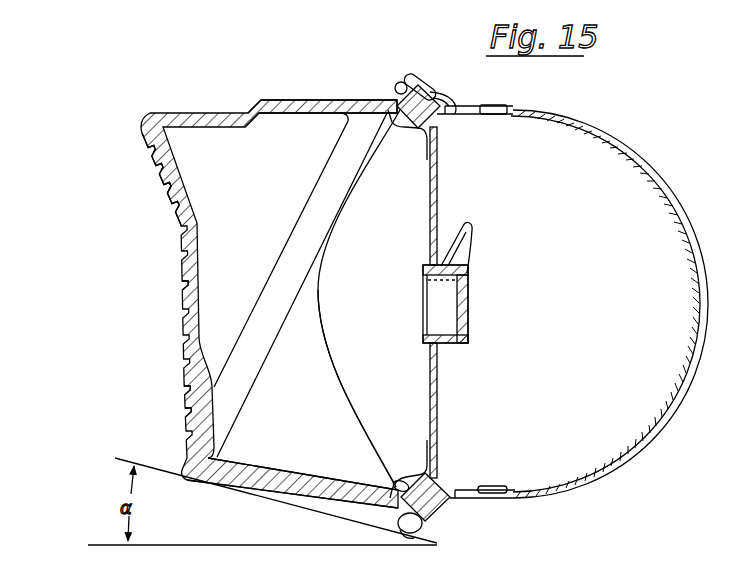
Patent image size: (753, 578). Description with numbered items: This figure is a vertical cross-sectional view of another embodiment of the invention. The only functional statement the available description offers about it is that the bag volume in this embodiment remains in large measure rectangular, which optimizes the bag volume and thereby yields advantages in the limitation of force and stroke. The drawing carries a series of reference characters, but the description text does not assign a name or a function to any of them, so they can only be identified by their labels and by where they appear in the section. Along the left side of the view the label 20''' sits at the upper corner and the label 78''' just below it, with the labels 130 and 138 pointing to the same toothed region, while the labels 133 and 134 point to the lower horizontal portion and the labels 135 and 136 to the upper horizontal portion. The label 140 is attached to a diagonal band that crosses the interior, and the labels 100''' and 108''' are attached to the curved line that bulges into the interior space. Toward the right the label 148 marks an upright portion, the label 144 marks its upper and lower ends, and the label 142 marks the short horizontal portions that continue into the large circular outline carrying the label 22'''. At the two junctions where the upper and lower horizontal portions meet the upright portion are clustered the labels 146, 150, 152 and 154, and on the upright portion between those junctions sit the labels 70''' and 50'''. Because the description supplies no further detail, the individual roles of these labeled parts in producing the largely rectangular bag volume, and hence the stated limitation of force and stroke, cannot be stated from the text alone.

The housing body 20''' is at (229, 297).
The side wall 78''' is at (120, 179).
The grooves 130 is at (186, 383).
The lower groove 138 is at (189, 417).
The bottom wall 133 is at (246, 496).
The bottom wall section 134 is at (292, 468).
The top wall 135 is at (294, 99).
The step 136 is at (250, 99).
The support member 140 is at (301, 200).
The diaphragm 100''' is at (354, 298).
The diaphragm edge 108''' is at (359, 388).
The back plate 148 is at (438, 177).
The bracket flange 144 is at (438, 118).
The rim flange 142 is at (460, 95).
The dome housing 22''' is at (609, 304).
The gasket 146 is at (396, 97).
The rivet head 150 is at (385, 82).
The fastener 152 is at (403, 78).
The lip 154 is at (433, 95).
The clamp holder 70''' is at (480, 304).
The spring finger 50''' is at (485, 249).